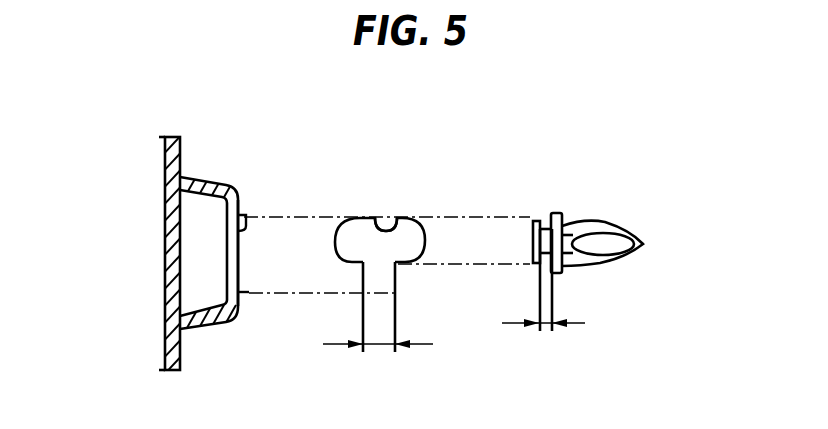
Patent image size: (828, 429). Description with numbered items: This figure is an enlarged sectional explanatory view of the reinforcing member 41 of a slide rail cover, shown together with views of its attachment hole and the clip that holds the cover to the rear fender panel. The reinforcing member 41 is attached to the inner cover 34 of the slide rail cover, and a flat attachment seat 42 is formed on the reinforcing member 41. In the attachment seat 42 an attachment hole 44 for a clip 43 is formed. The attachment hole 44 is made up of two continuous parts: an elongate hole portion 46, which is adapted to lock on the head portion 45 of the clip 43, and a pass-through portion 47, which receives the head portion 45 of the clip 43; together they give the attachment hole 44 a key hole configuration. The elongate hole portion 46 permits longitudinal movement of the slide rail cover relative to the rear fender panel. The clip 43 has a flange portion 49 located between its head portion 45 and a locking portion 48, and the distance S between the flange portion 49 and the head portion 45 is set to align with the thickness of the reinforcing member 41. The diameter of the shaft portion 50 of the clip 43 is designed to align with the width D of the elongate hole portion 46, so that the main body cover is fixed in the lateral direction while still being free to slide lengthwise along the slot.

The inner cover 34 is at (165, 262).
The reinforcing member 41 is at (195, 330).
The attachment seat 42 is at (262, 305).
The clip 43 is at (603, 212).
The attachment hole 44 is at (245, 231).
The head portion 45 is at (537, 221).
The elongate hole portion 46 is at (395, 278).
The pass-through portion 47 is at (394, 218).
The locking portion 48 is at (623, 227).
The flange portion 49 is at (563, 274).
The shaft portion 50 is at (552, 213).
The width of the elongate hole portion D is at (378, 346).
The distance between flange portion and head portion S is at (545, 326).